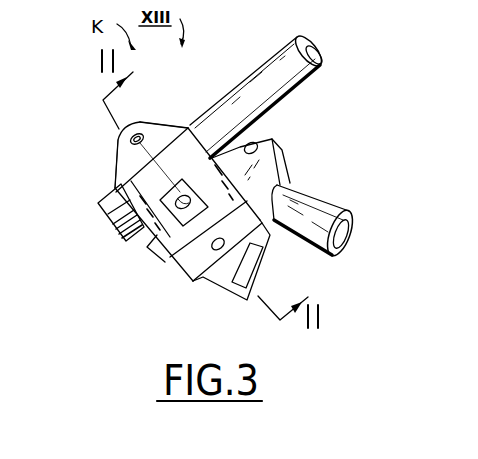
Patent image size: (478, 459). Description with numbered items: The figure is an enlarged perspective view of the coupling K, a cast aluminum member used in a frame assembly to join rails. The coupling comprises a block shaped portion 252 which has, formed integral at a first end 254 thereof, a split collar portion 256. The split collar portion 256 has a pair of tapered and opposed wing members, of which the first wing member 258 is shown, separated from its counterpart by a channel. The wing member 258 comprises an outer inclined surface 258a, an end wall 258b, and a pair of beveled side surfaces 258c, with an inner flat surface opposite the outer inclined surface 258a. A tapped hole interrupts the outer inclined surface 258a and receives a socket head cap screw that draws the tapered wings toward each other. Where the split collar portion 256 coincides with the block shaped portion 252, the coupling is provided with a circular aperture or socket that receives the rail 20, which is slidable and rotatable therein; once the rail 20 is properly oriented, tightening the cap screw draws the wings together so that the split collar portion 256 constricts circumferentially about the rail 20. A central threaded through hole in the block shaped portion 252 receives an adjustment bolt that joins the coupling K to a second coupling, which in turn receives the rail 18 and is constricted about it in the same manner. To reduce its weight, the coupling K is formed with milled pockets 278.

The rail 18 is at (328, 208).
The rail 20 is at (317, 57).
The block shaped portion 252 is at (190, 225).
The first end 254 is at (108, 216).
The split collar portion 256 is at (112, 186).
The first wing member 258 is at (150, 120).
The outer inclined surface 258a is at (123, 160).
The end wall 258b is at (131, 137).
The beveled side surfaces 258c is at (187, 125).
The milled pockets 278 is at (187, 228).